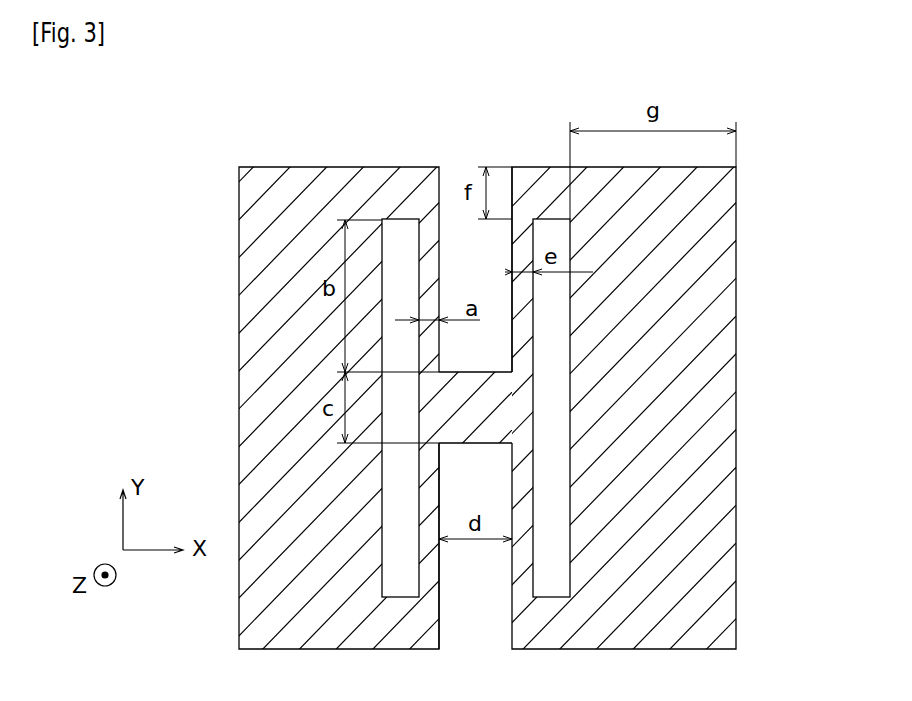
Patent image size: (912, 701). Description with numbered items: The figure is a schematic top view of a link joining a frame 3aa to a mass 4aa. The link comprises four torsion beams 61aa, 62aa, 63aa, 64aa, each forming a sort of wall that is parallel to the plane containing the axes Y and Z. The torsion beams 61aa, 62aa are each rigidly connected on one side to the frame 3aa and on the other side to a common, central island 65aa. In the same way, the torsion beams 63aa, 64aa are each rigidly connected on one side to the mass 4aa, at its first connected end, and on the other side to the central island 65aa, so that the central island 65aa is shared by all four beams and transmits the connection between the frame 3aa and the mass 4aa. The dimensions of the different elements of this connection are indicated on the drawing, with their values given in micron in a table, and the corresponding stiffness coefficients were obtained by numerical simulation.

The frame 3aa is at (287, 613).
The mass 4aa is at (697, 627).
The torsion beam 61aa is at (421, 257).
The torsion beam 62aa is at (428, 563).
The torsion beam 63aa is at (517, 308).
The torsion beam 64aa is at (518, 498).
The central island 65aa is at (483, 407).